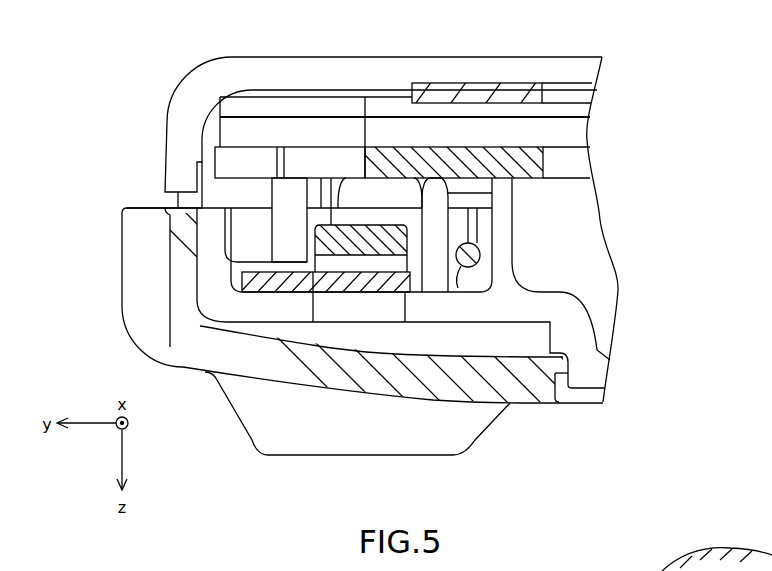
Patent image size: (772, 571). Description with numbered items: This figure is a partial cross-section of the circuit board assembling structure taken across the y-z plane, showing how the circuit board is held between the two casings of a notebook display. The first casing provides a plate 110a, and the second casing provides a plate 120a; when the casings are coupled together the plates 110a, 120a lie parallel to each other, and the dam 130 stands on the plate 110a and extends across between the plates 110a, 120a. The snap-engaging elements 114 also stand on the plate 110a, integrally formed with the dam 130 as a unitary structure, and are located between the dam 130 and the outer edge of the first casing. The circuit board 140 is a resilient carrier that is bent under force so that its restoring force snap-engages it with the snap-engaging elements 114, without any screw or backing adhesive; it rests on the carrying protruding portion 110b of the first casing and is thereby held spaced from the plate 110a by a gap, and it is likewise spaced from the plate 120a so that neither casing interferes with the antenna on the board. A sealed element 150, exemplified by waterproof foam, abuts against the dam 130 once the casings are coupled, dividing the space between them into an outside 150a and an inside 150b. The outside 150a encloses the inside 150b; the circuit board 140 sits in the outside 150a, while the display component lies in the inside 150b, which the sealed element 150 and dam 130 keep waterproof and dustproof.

The plate 110a is at (520, 320).
The carrying protruding portion 110b is at (337, 307).
The snap-engaging element 114 is at (337, 238).
The plate 120a is at (522, 70).
The dam 130 is at (503, 222).
The circuit board 140 is at (243, 280).
The sealed element 150 is at (412, 157).
The outside 150a is at (330, 160).
The inside 150b is at (555, 164).